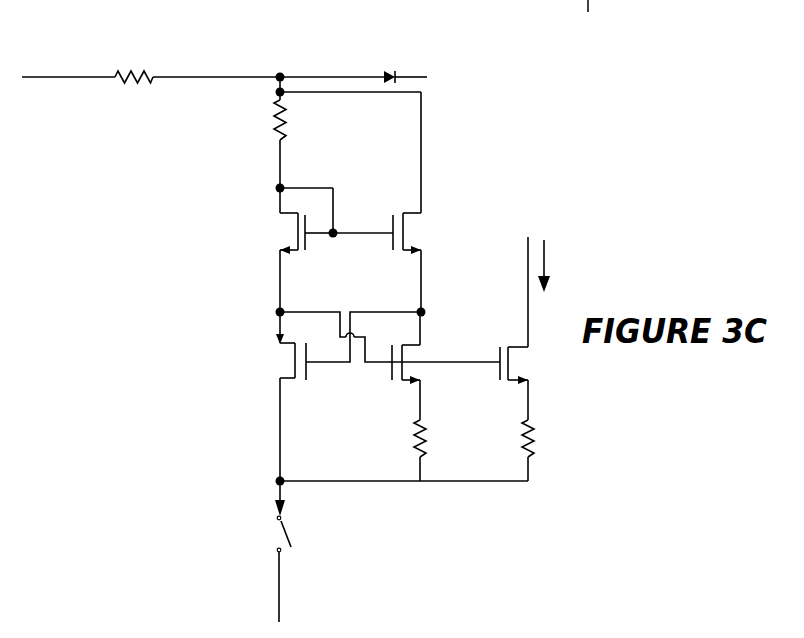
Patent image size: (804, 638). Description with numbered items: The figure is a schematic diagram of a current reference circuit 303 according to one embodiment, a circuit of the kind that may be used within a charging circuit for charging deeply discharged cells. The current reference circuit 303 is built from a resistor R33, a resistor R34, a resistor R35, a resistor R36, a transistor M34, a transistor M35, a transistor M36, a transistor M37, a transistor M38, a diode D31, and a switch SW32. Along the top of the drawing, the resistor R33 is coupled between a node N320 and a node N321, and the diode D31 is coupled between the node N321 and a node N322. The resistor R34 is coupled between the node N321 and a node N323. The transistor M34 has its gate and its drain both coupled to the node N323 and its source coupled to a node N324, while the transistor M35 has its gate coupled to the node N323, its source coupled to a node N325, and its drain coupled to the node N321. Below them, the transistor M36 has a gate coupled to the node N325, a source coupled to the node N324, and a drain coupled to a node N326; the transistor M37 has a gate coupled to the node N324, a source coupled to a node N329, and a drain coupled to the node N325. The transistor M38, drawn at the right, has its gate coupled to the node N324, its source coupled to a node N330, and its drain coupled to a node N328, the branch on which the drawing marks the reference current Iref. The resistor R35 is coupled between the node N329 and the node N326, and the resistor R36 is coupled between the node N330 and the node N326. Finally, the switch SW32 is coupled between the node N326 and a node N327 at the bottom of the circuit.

The current reference circuit 303 is at (180, 53).
The node N320 is at (40, 92).
The node N321 is at (283, 66).
The node N322 is at (437, 62).
The diode D31 is at (384, 66).
The node N323 is at (252, 179).
The node N324 is at (257, 306).
The node N325 is at (432, 262).
The node N326 is at (252, 472).
The node N327 is at (295, 601).
The node N328 is at (532, 224).
The node N329 is at (430, 408).
The node N330 is at (535, 408).
The resistor R33 is at (134, 84).
The resistor R34 is at (290, 144).
The resistor R35 is at (410, 450).
The resistor R36 is at (517, 450).
The transistor M34 is at (324, 258).
The transistor M35 is at (420, 229).
The transistor M36 is at (280, 396).
The transistor M37 is at (446, 348).
The transistor M38 is at (527, 359).
The switch SW32 is at (268, 534).
The reference current Iref is at (558, 266).